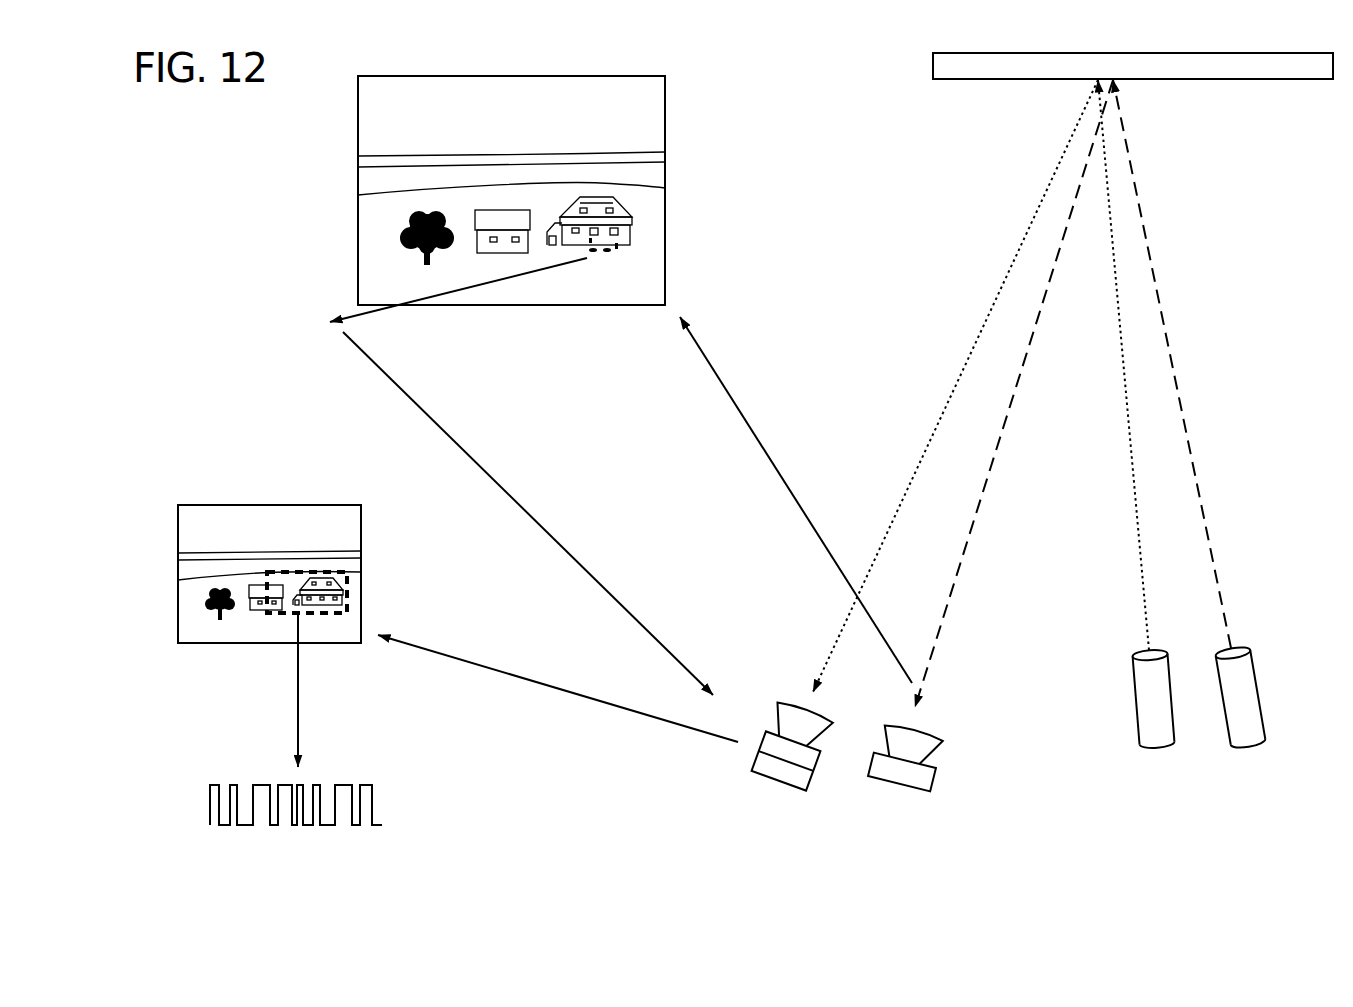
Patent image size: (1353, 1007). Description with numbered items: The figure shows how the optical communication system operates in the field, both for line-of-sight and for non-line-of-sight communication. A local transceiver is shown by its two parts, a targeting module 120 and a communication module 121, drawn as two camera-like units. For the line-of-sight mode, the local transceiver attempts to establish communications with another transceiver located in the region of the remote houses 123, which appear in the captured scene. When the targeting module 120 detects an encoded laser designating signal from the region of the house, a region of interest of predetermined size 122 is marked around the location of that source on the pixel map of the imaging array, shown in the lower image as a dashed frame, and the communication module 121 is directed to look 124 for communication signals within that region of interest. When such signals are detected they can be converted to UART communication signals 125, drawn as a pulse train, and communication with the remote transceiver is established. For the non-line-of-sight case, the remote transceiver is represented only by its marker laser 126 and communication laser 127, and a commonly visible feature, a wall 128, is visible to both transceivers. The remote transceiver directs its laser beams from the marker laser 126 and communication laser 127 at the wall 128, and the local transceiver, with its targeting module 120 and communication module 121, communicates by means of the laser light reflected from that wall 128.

The targeting module 120 is at (895, 785).
The communication module 121 is at (773, 785).
The region of interest of predetermined size 122 is at (613, 253).
The remote houses 123 is at (632, 219).
The look for communication signals 124 is at (499, 476).
The UART communication signals 125 is at (298, 703).
The marker laser 126 is at (1155, 747).
The communication laser 127 is at (1245, 745).
The wall 128 is at (933, 68).